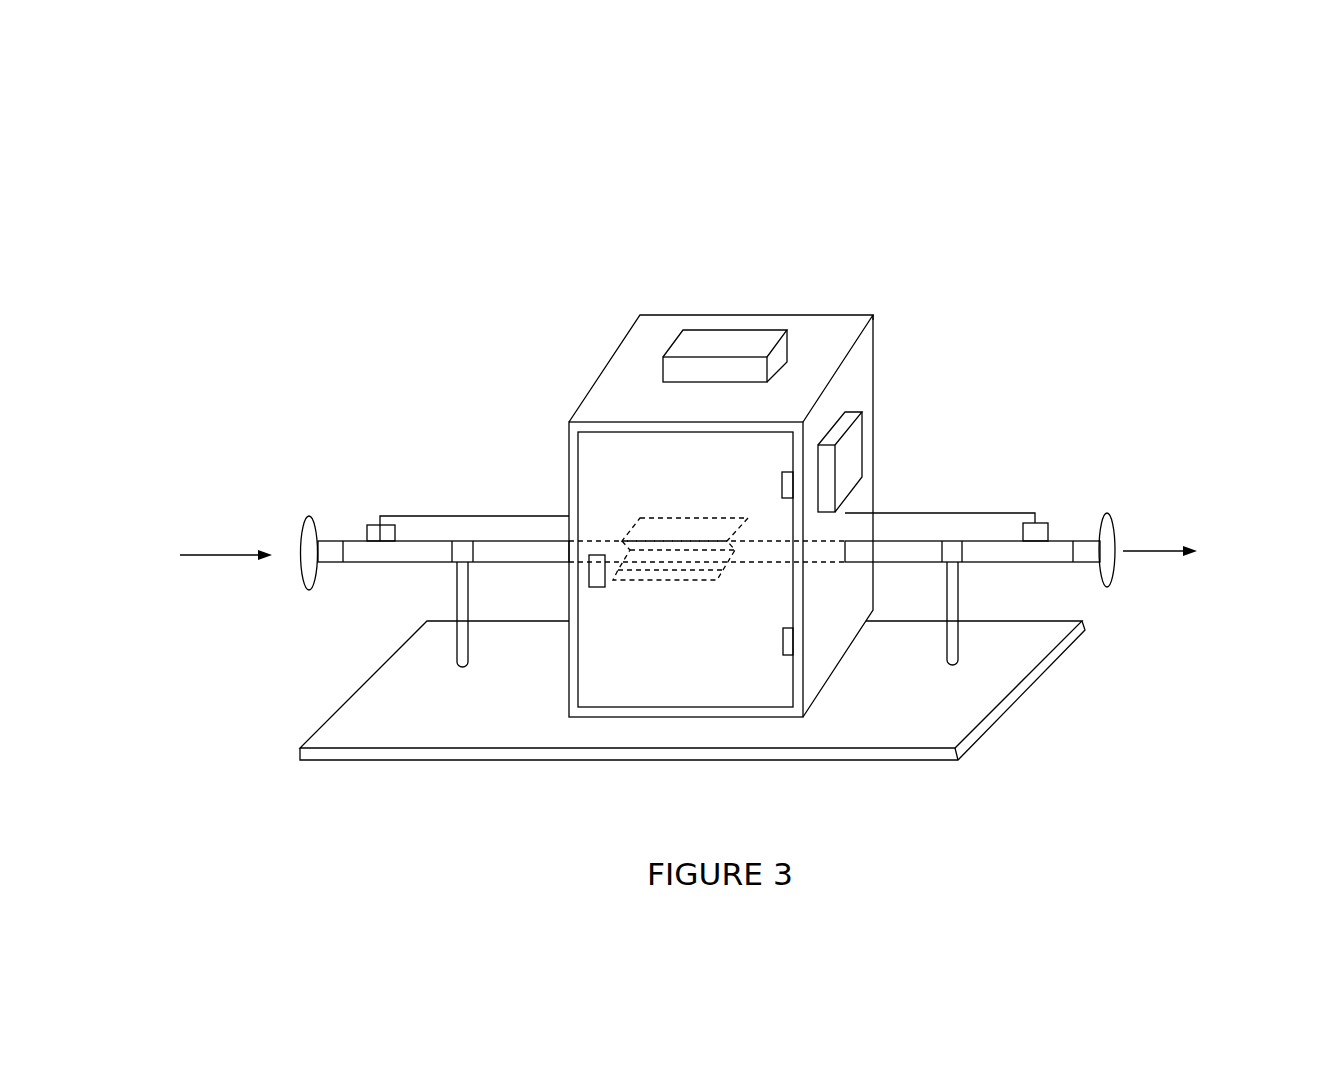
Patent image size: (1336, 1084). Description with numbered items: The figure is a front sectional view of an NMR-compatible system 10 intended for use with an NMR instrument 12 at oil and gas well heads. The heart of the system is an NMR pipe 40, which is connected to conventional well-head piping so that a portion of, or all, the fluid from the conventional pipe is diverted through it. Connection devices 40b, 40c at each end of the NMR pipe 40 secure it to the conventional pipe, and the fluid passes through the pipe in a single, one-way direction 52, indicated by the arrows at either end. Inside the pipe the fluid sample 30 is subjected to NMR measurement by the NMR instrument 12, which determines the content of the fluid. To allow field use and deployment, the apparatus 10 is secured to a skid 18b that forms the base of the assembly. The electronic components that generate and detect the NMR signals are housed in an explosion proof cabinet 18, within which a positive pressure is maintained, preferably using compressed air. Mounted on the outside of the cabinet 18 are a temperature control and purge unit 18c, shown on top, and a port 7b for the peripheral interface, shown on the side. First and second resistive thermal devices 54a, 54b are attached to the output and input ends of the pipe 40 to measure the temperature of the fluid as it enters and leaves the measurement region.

The NMR-compatible system 10 is at (808, 198).
The NMR instrument 12 is at (643, 385).
The explosion proof cabinet 18 is at (869, 317).
The skid 18b is at (1033, 682).
The temperature control and purge unit 18c is at (742, 329).
The port 7b is at (874, 412).
The stack of products 30 is at (643, 527).
The NMR pipe 40 is at (360, 541).
The connection device 40b is at (304, 518).
The connection device 40c is at (1113, 516).
The direction of travel 52 is at (689, 554).
The first resistive thermal device 54a is at (1040, 523).
The second resistive thermal device 54b is at (378, 525).